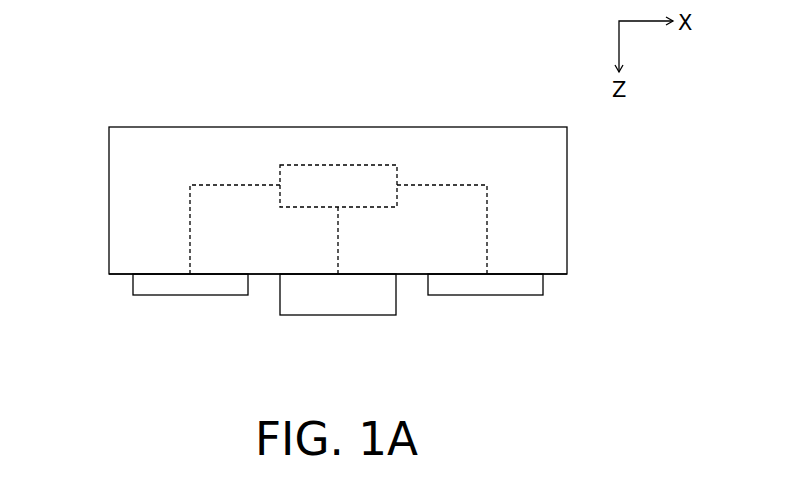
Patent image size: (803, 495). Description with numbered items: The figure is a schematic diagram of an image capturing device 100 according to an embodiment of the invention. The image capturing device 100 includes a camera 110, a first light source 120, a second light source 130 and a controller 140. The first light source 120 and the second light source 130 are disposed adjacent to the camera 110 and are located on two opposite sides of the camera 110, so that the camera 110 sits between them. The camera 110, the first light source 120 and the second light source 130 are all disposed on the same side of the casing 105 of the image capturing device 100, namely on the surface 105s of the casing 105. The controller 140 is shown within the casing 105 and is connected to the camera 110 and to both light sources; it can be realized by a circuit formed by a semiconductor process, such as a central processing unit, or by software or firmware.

The image capturing device 100 is at (223, 78).
The casing 105 is at (567, 240).
The surface 105s is at (557, 275).
The camera 110 is at (342, 302).
The first light source 120 is at (189, 296).
The second light source 130 is at (484, 296).
The controller 140 is at (342, 165).